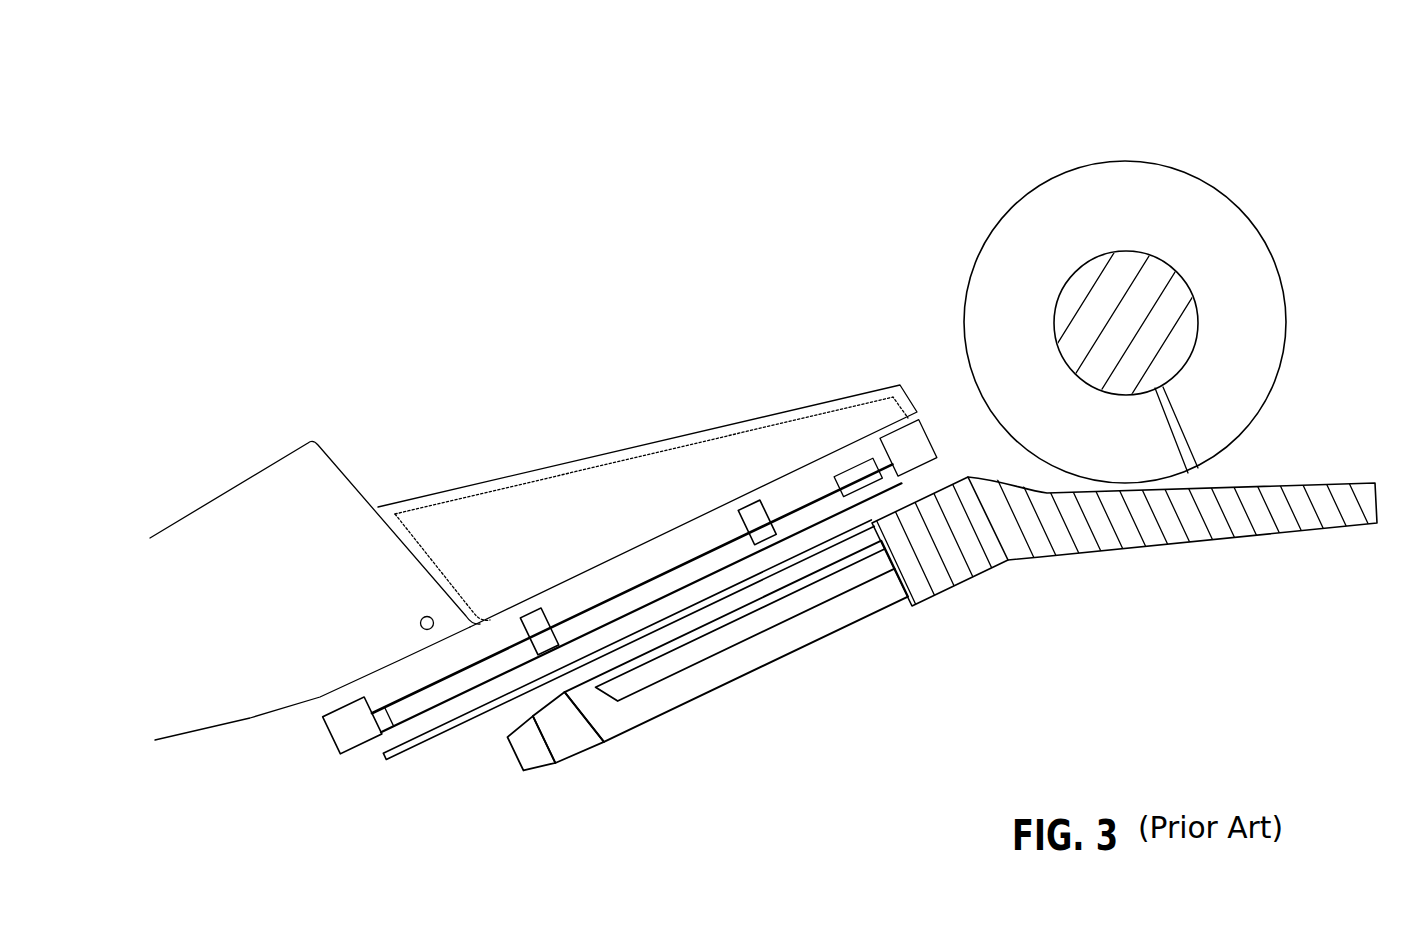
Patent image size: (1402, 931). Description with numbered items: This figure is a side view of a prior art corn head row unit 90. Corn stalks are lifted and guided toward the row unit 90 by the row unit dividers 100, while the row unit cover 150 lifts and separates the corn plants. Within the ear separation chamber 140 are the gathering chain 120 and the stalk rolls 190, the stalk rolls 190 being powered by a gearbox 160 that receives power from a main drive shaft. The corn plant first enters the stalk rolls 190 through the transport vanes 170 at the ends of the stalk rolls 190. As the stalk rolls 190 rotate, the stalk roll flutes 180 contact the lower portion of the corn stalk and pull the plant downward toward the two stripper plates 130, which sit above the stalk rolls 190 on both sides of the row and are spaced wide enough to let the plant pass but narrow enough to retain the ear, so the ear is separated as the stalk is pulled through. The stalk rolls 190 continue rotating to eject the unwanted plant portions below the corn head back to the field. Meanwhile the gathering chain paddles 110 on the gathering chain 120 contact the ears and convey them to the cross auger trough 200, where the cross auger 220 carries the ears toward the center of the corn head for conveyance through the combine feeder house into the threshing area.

The row unit 90 is at (375, 303).
The row unit dividers 100 is at (265, 505).
The gathering chain paddles 110 is at (342, 757).
The gathering chain 120 is at (503, 647).
The stripper plates 130 is at (579, 680).
The ear separation chamber 140 is at (692, 493).
The row unit covers 150 is at (802, 437).
The gearbox 160 is at (952, 588).
The transport vanes 170 is at (545, 770).
The stalk roll flutes 180 is at (643, 732).
The stalk rolls 190 is at (842, 600).
The cross auger trough 200 is at (1127, 552).
The cross auger 220 is at (1013, 317).